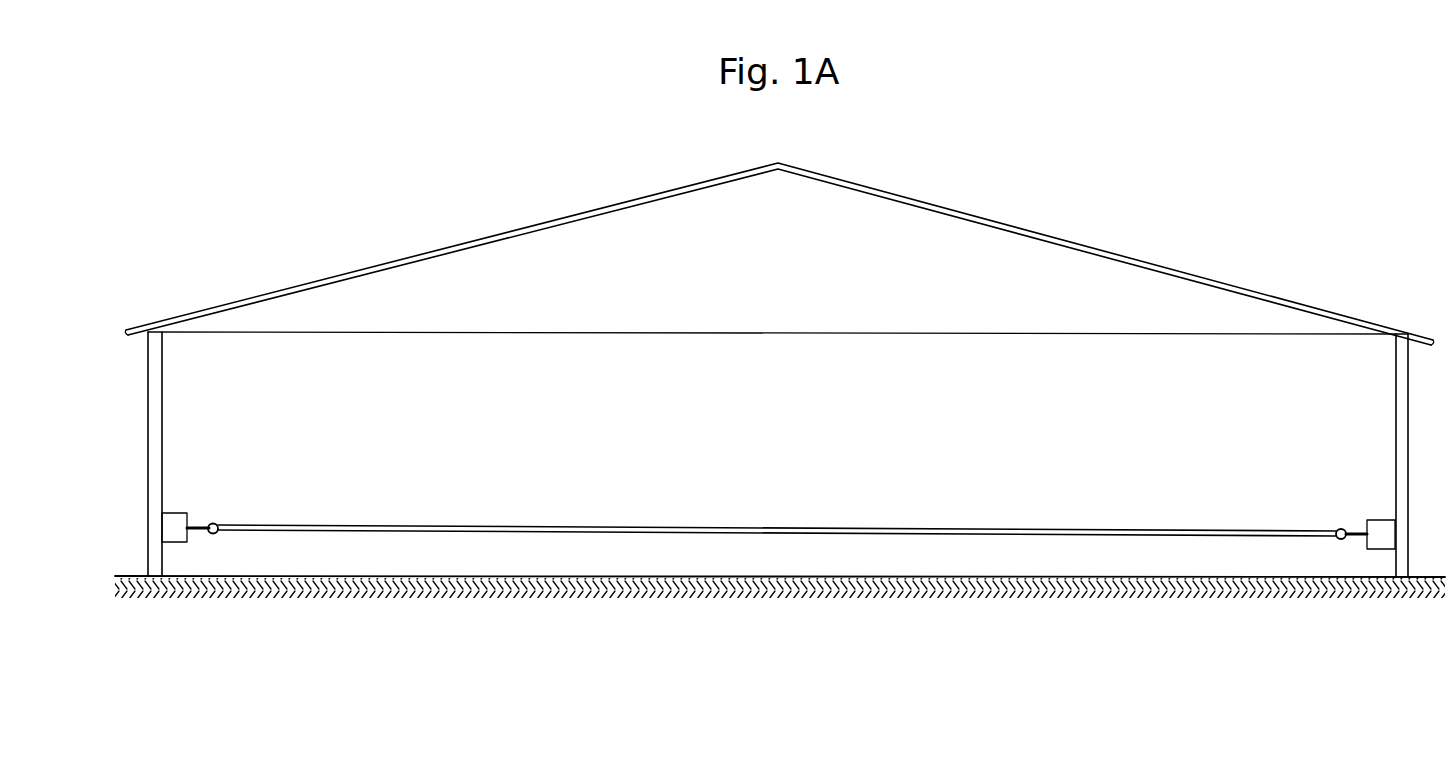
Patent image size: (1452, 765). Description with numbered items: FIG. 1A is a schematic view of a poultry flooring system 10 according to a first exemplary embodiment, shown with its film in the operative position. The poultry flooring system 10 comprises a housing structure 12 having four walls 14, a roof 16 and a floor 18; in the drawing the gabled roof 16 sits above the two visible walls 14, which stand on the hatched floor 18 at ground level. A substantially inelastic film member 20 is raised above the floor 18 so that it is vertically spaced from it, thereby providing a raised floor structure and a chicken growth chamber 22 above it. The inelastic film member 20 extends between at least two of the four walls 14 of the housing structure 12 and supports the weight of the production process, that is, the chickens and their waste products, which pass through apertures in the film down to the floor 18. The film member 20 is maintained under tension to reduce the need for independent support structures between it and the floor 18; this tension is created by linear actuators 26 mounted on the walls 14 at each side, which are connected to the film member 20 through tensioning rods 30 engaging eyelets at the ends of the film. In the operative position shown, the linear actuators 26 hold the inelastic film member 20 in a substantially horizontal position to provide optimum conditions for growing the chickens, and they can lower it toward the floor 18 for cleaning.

The poultry flooring system 10 is at (780, 439).
The housing structure 12 is at (1045, 232).
The walls 14 is at (163, 416).
The roof 16 is at (531, 224).
The floor 18 is at (995, 578).
The inelastic film member 20 is at (715, 526).
The chicken growth chamber 22 is at (810, 403).
The linear actuators 26 is at (173, 513).
The tensioning rod 30 is at (203, 533).